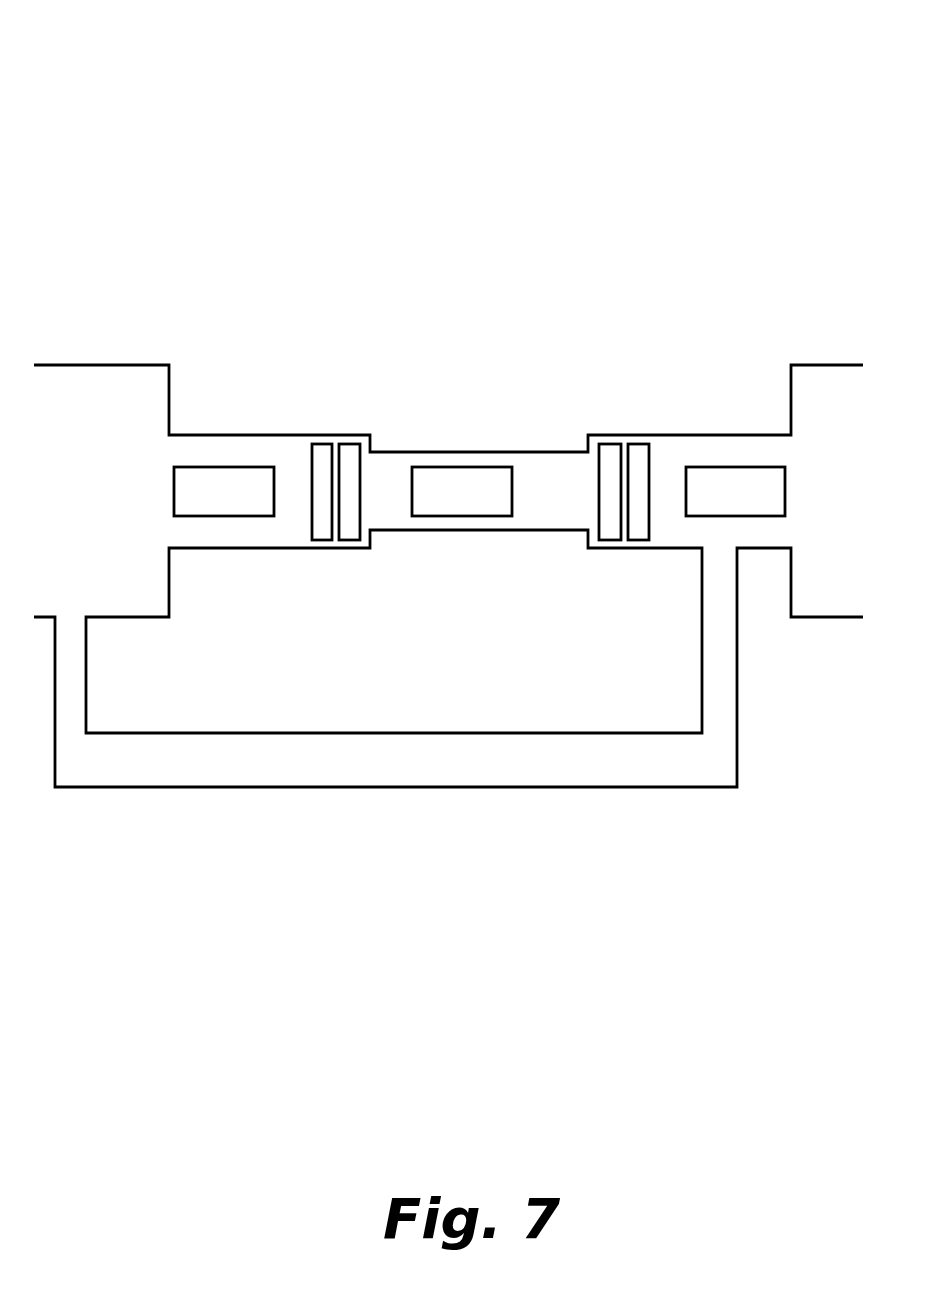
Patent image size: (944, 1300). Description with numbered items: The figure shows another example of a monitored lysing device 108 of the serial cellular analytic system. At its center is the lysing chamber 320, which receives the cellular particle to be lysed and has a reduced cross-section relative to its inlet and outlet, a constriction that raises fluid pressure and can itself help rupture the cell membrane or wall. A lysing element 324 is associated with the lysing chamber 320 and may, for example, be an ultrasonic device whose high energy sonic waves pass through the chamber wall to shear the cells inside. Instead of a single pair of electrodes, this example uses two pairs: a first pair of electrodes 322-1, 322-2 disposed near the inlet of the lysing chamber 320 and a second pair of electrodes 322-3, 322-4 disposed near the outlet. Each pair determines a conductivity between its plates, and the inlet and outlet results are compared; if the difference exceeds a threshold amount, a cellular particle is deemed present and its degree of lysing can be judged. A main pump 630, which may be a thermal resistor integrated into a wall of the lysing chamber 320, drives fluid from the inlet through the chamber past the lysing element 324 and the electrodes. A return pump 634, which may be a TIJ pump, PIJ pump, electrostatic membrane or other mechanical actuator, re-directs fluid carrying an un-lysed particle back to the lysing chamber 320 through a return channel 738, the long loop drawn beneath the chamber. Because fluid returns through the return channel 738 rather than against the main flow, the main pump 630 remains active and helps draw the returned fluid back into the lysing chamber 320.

The monitored lysing device 108 is at (275, 93).
The lysing chamber 320 is at (527, 515).
The first electrode of first pair of electrodes 322-1 is at (320, 457).
The second electrode of first pair of electrodes 322-2 is at (355, 527).
The first electrode of second pair of electrodes 322-3 is at (612, 457).
The second electrode of second pair of electrodes 322-4 is at (637, 528).
The lysing element 324 is at (448, 475).
The main pump 630 is at (210, 475).
The return pump 634 is at (707, 480).
The return channel 738 is at (428, 770).